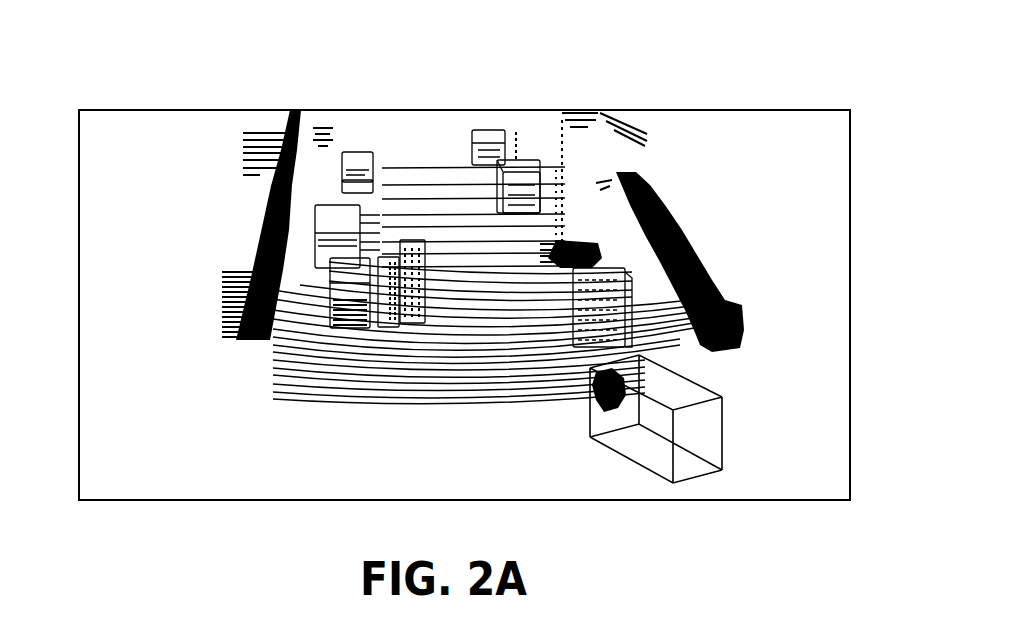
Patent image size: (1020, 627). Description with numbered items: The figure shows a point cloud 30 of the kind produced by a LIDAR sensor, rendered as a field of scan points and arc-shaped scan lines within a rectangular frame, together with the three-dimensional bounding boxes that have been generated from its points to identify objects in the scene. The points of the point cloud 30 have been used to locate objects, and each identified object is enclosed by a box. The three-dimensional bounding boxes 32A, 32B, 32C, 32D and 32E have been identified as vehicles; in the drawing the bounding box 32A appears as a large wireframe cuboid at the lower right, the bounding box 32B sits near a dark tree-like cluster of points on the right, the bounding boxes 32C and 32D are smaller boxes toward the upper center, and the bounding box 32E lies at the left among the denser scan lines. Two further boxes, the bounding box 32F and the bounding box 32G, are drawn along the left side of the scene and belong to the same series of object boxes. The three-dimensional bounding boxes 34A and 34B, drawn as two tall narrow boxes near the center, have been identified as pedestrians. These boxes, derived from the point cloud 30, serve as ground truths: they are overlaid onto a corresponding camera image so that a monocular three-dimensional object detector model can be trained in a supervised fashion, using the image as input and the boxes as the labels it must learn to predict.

The point cloud 30 is at (723, 77).
The 3D bounding box 32A is at (703, 477).
The 3D bounding box 32B is at (632, 288).
The 3D bounding box 32C is at (523, 160).
The 3D bounding box 32D is at (487, 130).
The 3D bounding box 32E is at (330, 283).
The 3D bounding box 32F is at (315, 233).
The 3D bounding box 32G is at (350, 151).
The 3D bounding box 34A is at (391, 257).
The 3D bounding box 34B is at (400, 240).